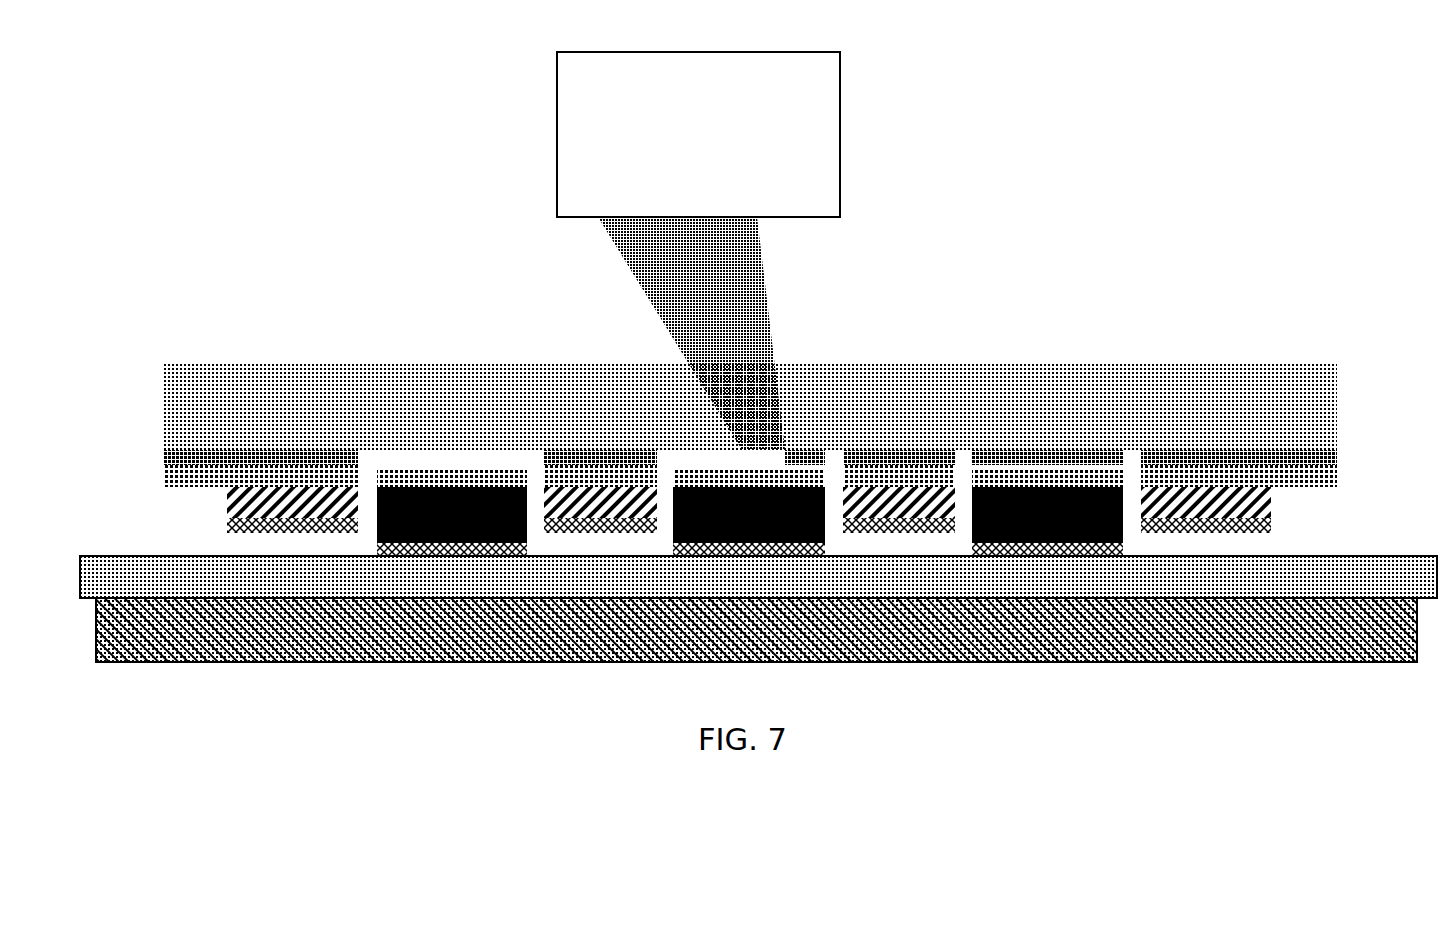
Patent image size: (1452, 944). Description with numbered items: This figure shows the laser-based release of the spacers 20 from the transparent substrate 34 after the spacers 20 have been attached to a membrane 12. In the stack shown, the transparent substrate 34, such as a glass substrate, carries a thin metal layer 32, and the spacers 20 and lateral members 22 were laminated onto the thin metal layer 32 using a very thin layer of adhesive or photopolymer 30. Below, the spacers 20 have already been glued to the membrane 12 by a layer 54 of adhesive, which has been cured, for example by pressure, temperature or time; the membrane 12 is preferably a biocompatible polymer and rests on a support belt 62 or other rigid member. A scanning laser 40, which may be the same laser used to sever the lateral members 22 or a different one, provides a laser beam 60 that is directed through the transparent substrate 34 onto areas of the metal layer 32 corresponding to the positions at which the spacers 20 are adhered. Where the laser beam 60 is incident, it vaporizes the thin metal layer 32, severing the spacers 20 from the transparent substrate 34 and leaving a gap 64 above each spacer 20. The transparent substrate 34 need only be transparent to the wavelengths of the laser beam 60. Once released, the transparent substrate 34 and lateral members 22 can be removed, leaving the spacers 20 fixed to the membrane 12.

The membrane 12 is at (843, 592).
The spacers 20 is at (467, 527).
The lateral members 22 is at (1271, 500).
The layer of adhesive or photopolymer 30 is at (1318, 480).
The thin metal layer 32 is at (162, 458).
The transparent substrate 34 is at (1295, 423).
The scanning laser 40 is at (713, 168).
The layer of adhesive 54 is at (448, 543).
The laser beam 60 is at (770, 327).
The support belt 62 is at (850, 647).
The gap 64 is at (452, 462).